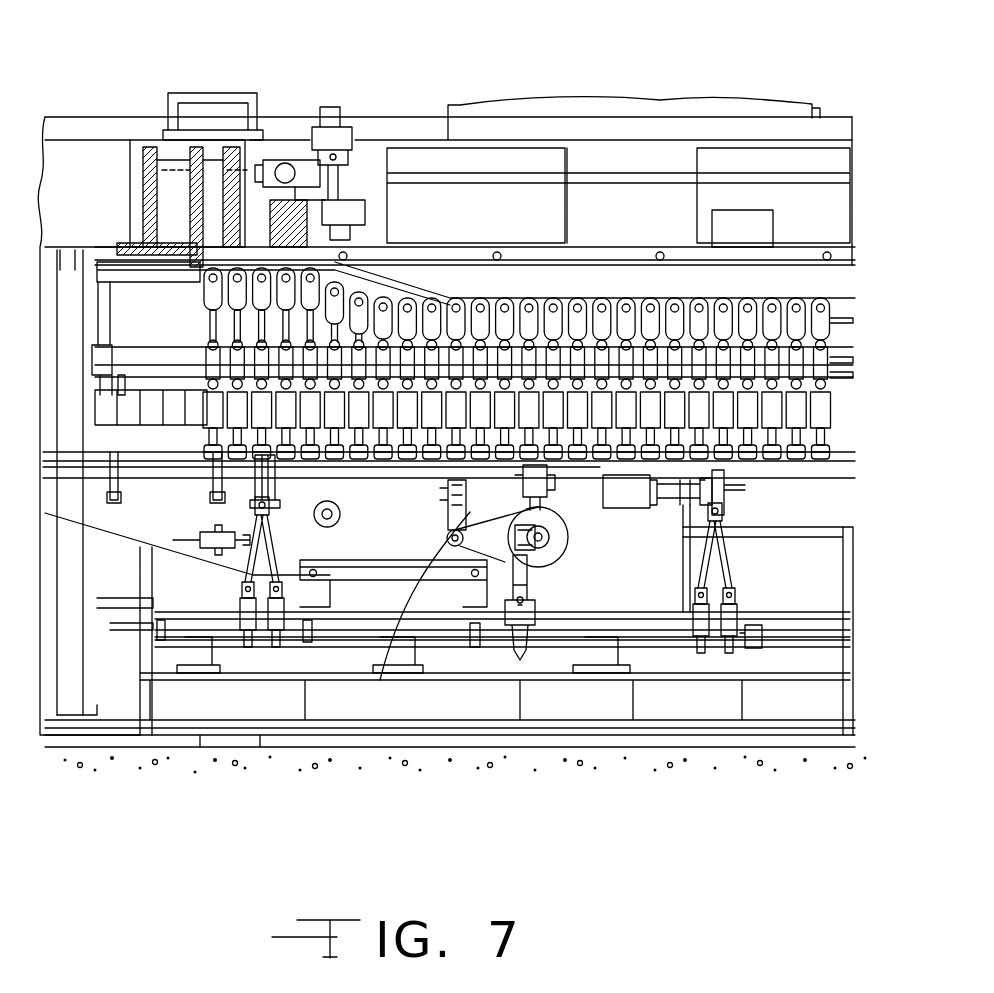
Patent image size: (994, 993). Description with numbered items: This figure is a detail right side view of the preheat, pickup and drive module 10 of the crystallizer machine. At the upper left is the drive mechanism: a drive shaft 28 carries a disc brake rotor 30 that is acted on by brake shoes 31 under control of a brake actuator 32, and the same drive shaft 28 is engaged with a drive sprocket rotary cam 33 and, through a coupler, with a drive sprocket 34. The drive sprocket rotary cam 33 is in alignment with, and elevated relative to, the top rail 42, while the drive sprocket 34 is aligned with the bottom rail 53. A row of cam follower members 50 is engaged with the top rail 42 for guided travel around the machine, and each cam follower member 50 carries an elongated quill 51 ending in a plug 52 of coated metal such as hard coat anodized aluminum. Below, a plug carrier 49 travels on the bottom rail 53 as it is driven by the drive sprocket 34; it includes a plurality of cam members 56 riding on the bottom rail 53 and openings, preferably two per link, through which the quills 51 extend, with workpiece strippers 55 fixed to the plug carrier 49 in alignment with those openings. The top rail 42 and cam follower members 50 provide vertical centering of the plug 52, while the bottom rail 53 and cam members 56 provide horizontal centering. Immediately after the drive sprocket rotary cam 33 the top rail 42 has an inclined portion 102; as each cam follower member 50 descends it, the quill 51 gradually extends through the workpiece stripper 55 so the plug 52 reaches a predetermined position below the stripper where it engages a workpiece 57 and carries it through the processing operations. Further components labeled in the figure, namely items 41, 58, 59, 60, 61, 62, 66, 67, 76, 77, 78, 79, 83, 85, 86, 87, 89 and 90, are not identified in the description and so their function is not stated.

The preheat, pickup and drive module 10 is at (858, 720).
The drive shaft 28 is at (210, 153).
The disc brake rotor 30 is at (233, 150).
The brake shoes 31 is at (260, 160).
The brake actuator 32 is at (350, 187).
The drive sprocket rotary cam 33 is at (115, 273).
The drive sprocket 34 is at (120, 353).
The guide rail 41 is at (350, 633).
The top rail 42 is at (375, 280).
The plug carrier 49 is at (492, 345).
The cam follower members 50 is at (800, 325).
The elongated quill 51 is at (208, 317).
The plug 52 is at (800, 460).
The bottom rail 53 is at (853, 366).
The workpiece strippers 55 is at (848, 480).
The cam members 56 is at (187, 427).
The workpiece 57 is at (600, 510).
The chute 58 is at (193, 655).
The bracket 59 is at (163, 637).
The drive 60 is at (417, 612).
The carriage table 61 is at (448, 640).
The shaft hanger 62 is at (327, 483).
The nozzle 66 is at (247, 645).
The arm 67 is at (250, 578).
The cylinder 76 is at (467, 498).
The slide 77 is at (443, 513).
The shaft 78 is at (520, 583).
The gear 79 is at (550, 510).
The pivot 83 is at (310, 526).
The cylinder 85 is at (220, 533).
The bracket 86 is at (730, 495).
The motor 87 is at (640, 508).
The arms 89 is at (731, 572).
The nozzle head 90 is at (727, 627).
The inclined portion 102 is at (407, 280).